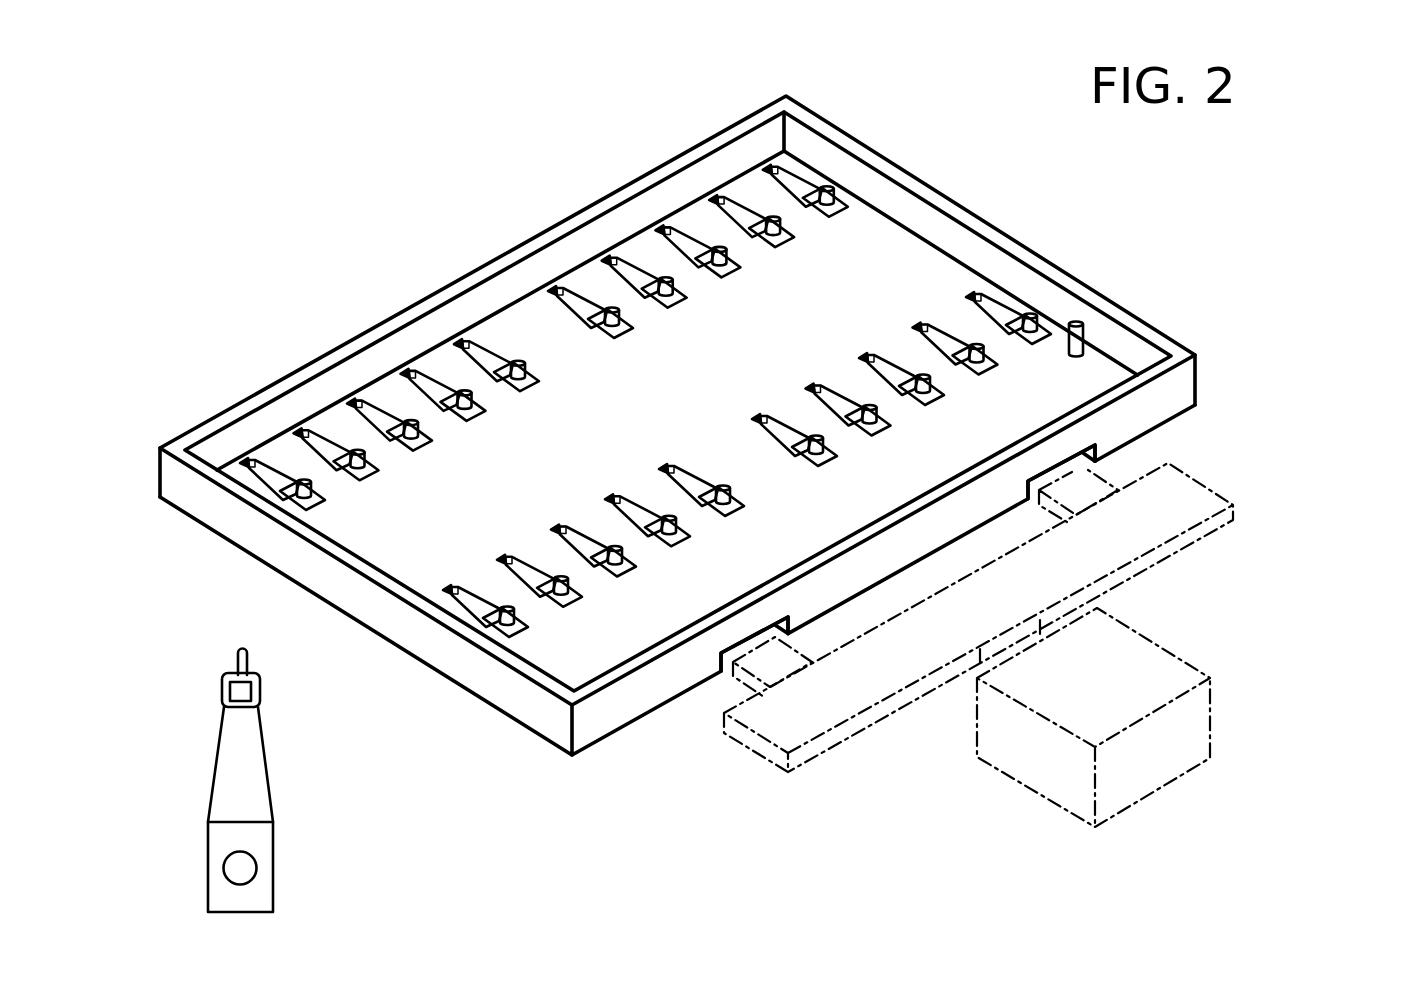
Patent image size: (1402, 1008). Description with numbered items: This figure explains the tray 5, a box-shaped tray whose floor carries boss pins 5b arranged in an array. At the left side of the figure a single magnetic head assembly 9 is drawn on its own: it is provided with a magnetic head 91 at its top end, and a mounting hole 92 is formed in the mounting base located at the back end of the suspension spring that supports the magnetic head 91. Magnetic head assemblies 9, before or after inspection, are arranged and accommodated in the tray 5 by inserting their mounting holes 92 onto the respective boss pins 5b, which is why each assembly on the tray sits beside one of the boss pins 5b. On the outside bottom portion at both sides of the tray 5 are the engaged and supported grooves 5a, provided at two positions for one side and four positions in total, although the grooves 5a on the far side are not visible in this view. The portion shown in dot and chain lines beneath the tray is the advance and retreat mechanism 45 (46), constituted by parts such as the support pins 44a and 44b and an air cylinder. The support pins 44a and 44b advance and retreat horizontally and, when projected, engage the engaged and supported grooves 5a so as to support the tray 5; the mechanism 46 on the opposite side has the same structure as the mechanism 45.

The tray 5 is at (688, 132).
The engaged and supported groove 5a is at (1078, 458).
The boss pin 5b is at (828, 190).
The magnetic head assembly 9 is at (798, 178).
The magnetic head 91 is at (238, 690).
The mounting hole 92 is at (256, 863).
The support pin 44a is at (730, 668).
The support pin 44b is at (1092, 470).
The advancing and retreating mechanism 45 is at (1177, 578).
The advancing and retreating mechanism 46 is at (1093, 717).